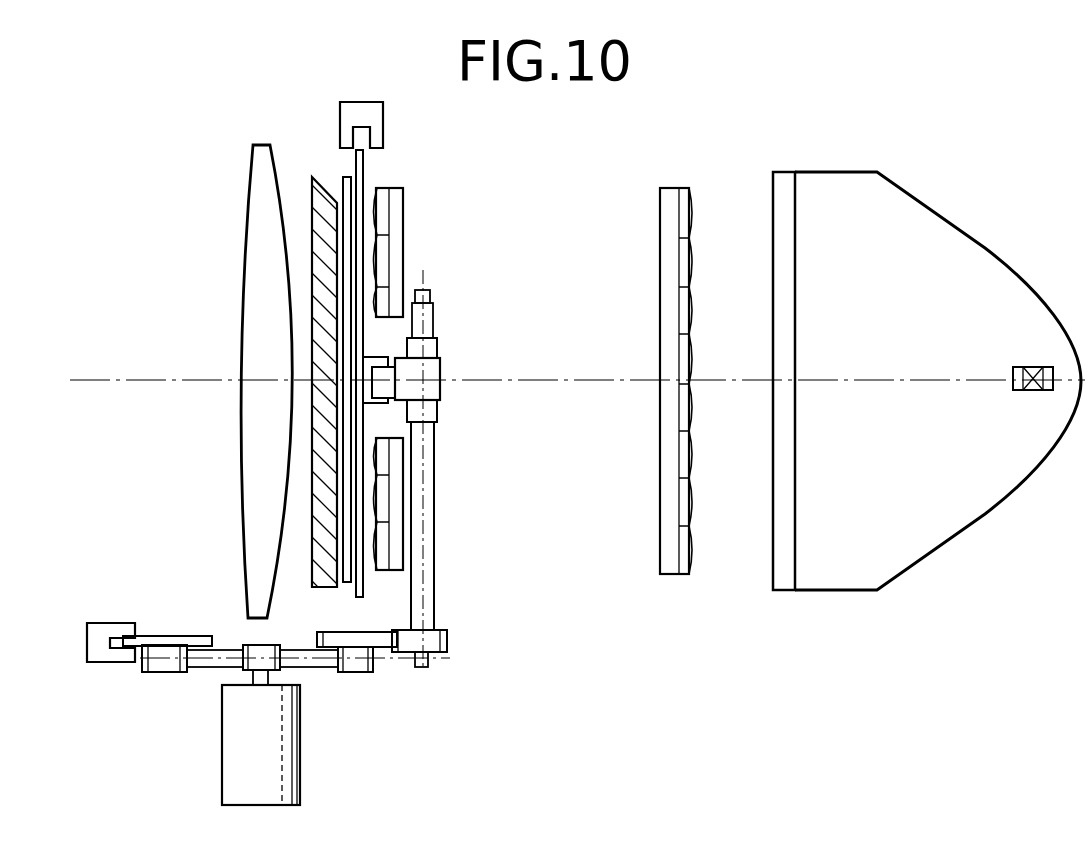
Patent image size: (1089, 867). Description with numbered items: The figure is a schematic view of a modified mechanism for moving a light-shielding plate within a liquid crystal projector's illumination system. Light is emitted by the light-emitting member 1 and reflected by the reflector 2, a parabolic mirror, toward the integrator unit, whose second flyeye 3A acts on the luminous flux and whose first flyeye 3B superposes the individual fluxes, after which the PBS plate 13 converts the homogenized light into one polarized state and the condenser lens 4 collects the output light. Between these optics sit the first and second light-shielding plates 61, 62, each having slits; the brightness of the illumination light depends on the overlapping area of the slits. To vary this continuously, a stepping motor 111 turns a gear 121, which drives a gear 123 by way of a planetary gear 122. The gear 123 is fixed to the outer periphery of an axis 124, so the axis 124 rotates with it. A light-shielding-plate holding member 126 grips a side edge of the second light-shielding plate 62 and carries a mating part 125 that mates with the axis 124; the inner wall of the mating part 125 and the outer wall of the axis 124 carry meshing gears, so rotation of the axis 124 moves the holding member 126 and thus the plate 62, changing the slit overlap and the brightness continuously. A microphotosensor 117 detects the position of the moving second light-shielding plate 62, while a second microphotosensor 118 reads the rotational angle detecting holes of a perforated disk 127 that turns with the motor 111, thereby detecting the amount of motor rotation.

The light-emitting member 1 is at (1021, 367).
The reflector 2 is at (966, 214).
The second flyeye 3A is at (676, 188).
The first flyeye 3B is at (395, 188).
The condenser lens 4 is at (248, 172).
The PBS plate 13 is at (318, 180).
The first light-shielding plate 61 is at (346, 177).
The second light-shielding plate 62 is at (364, 158).
The stepping motor 111 is at (295, 762).
The microphotosensor 117 is at (375, 113).
The microphotosensor 118 is at (112, 623).
The gear 121 is at (327, 660).
The planetary gear 122 is at (378, 660).
The gear 123 is at (447, 640).
The axis 124 is at (434, 496).
The mating part 125 is at (428, 368).
The light-shielding-plate holding member 126 is at (380, 403).
The perforated disk 127 is at (203, 636).